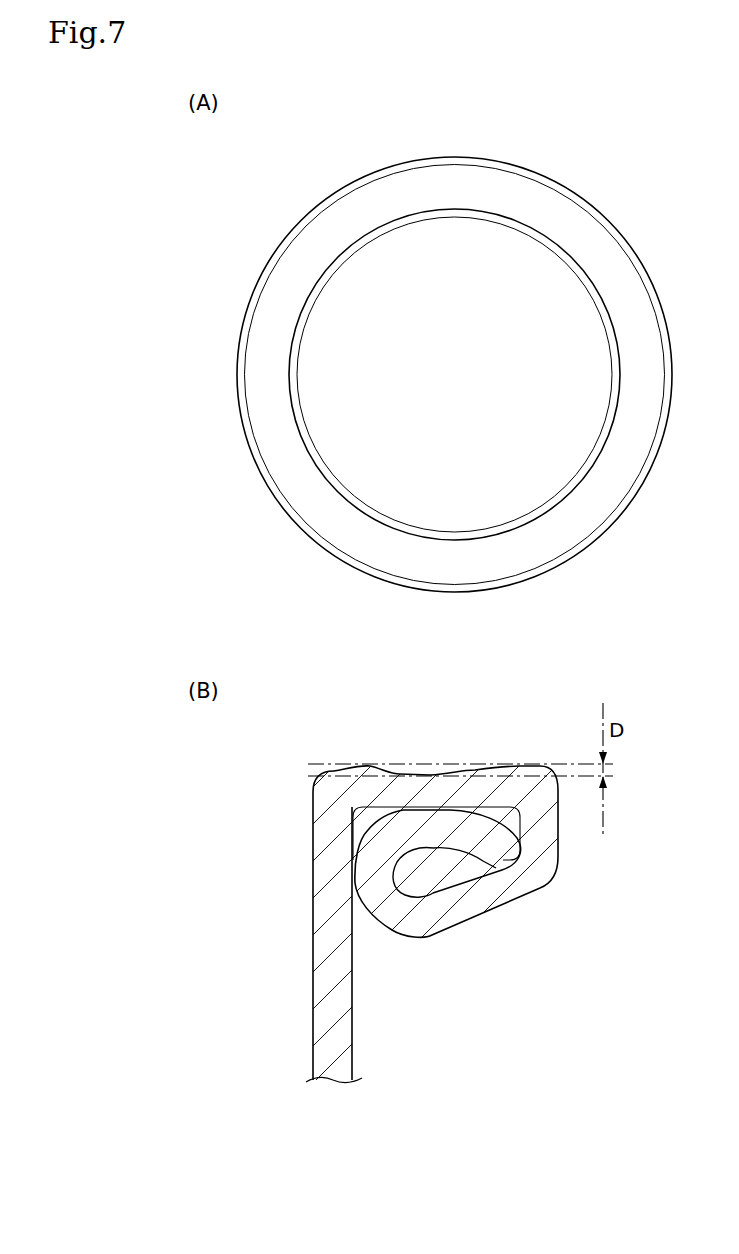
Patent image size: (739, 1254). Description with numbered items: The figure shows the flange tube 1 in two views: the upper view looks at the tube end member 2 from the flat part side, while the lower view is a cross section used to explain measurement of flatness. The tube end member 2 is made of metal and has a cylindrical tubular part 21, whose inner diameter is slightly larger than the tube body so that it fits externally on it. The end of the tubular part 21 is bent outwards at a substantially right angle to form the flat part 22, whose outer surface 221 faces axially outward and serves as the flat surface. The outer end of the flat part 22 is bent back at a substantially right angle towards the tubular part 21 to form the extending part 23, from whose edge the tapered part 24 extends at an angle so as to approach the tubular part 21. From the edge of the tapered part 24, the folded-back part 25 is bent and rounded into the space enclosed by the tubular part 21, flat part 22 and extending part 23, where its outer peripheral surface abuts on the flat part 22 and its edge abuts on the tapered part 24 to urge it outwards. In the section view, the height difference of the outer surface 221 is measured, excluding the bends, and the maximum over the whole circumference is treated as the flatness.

The flange tube 1 is at (286, 228).
The tube end member 2 is at (652, 289).
The tubular part 21 is at (319, 908).
The flat part 22 is at (540, 200).
The outer surface 221 is at (515, 552).
The extending part 23 is at (552, 830).
The tapered part 24 is at (482, 900).
The folded-back part 25 is at (438, 835).